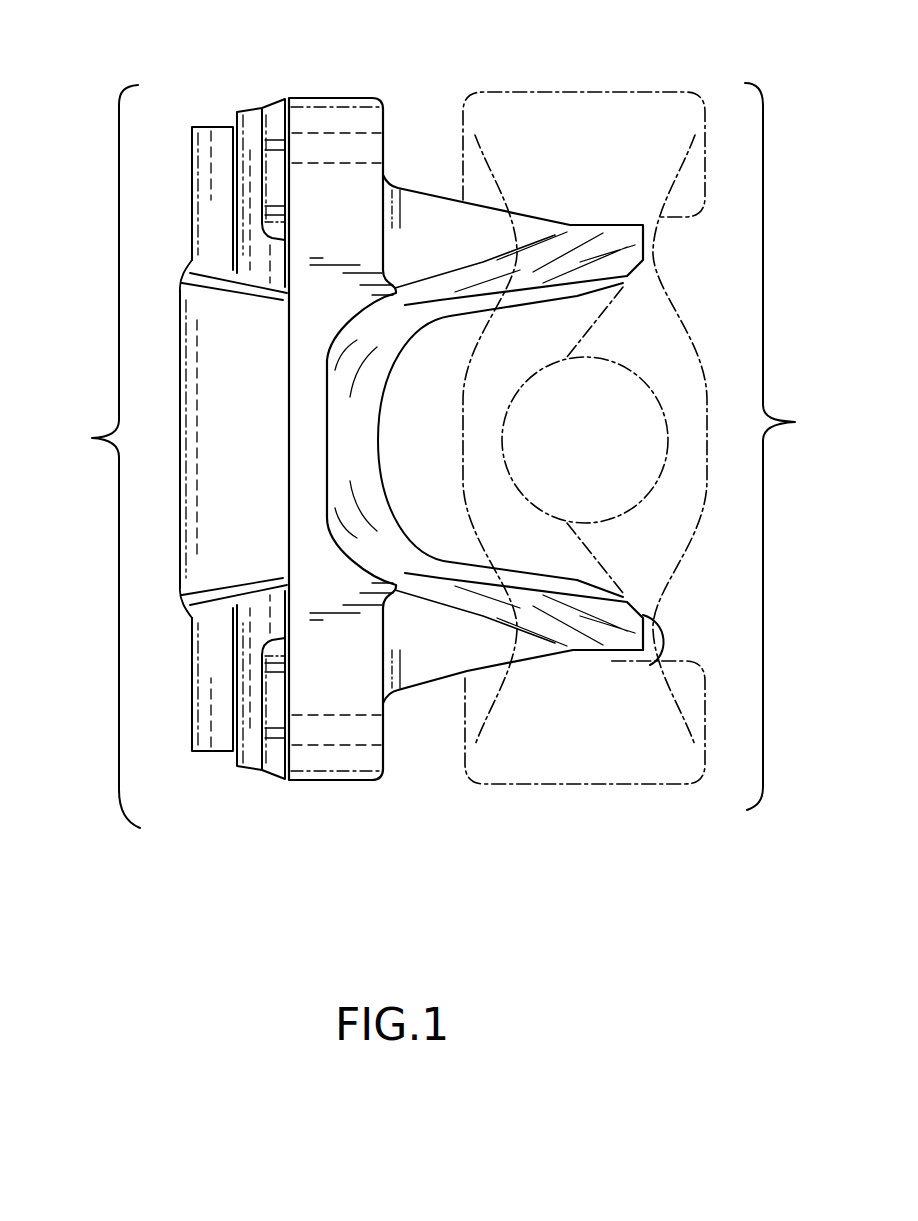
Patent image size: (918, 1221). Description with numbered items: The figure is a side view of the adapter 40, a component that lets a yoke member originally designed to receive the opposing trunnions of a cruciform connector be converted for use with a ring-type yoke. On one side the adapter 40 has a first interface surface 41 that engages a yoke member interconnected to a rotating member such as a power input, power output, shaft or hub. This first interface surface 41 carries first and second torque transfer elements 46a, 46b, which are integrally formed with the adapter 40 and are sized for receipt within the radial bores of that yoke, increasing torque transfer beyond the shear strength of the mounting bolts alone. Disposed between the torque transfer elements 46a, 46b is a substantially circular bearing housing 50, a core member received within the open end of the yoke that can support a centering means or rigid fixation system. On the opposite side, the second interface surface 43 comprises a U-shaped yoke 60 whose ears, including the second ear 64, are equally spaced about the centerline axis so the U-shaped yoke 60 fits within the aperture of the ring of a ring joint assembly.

The adapter 40 is at (342, 75).
The first interface surface 41 is at (95, 456).
The second interface surface 43 is at (647, 446).
The first torque transfer element 46a is at (217, 126).
The second torque transfer element 46b is at (210, 753).
The bearing housing 50 is at (182, 475).
The U-shaped yoke 60 is at (440, 198).
The second ear 64 is at (660, 663).